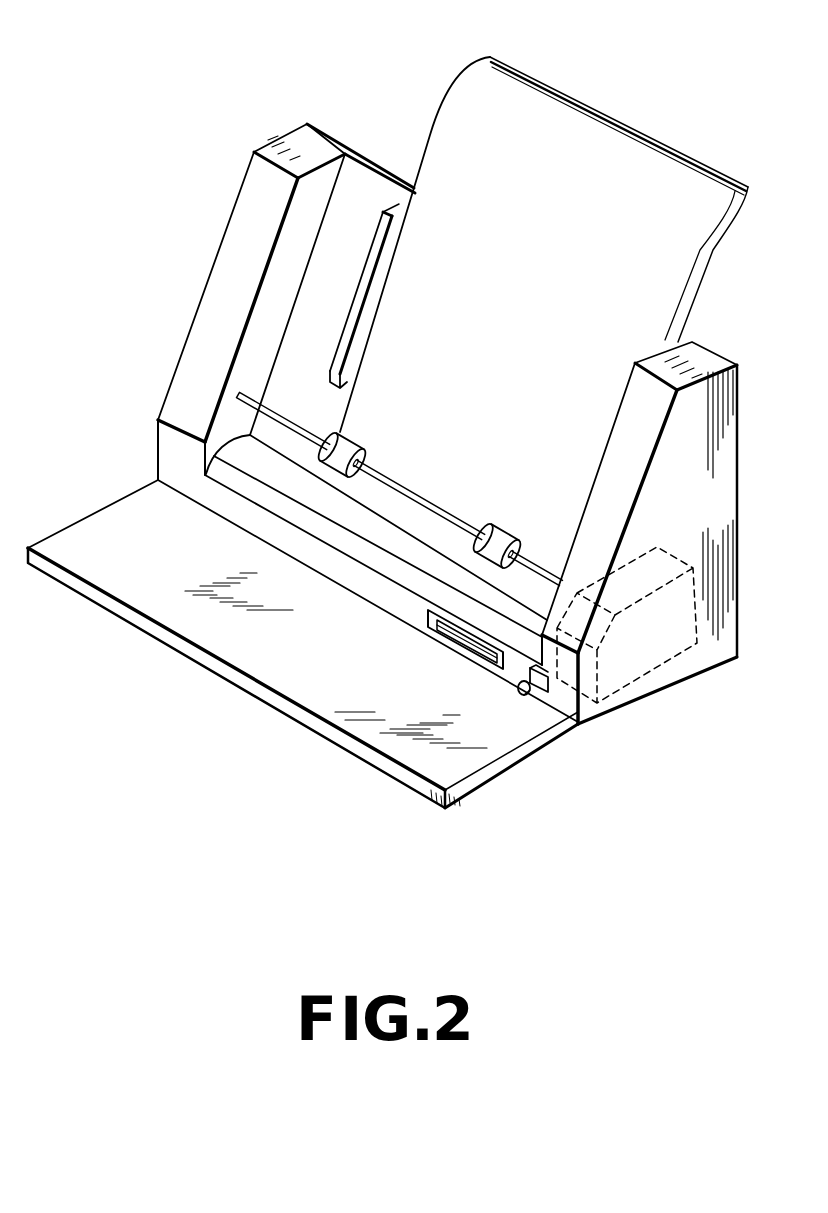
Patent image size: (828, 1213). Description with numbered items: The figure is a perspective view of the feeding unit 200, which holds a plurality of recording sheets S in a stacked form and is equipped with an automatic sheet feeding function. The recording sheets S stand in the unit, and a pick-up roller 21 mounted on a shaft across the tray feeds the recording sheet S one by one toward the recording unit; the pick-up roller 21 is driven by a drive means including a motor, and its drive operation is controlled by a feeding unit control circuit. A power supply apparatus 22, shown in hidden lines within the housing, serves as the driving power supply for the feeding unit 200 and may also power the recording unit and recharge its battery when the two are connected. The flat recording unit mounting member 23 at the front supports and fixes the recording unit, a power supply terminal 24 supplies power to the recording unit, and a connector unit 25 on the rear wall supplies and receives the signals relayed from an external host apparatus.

The feeding unit 200 is at (372, 116).
The recording sheet S is at (545, 117).
The pick-up roller 21 is at (350, 446).
The power supply apparatus 22 is at (630, 677).
The recording unit mounting member 23 is at (130, 517).
The power supply terminal 24 is at (515, 700).
The connector unit 25 is at (447, 633).